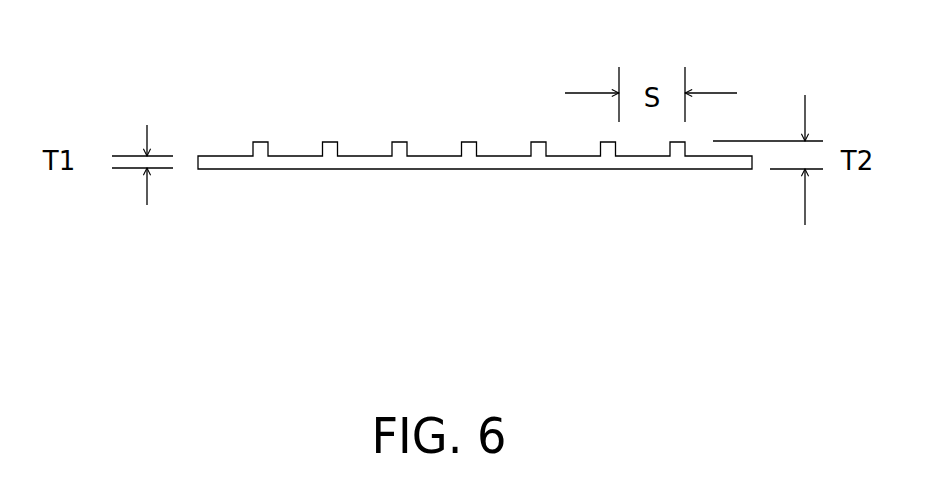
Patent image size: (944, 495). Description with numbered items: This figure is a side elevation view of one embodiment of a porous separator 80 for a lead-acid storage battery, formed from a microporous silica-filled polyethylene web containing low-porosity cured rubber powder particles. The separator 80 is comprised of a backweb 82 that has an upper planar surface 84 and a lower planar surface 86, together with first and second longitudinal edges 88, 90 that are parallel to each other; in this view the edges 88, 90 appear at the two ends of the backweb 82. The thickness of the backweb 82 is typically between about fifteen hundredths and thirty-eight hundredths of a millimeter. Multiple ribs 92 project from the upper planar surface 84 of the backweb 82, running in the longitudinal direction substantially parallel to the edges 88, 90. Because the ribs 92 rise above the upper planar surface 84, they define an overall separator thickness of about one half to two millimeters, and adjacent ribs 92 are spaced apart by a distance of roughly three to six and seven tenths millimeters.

The porous separator 80 is at (576, 208).
The backweb 82 is at (372, 166).
The upper planar surface 84 is at (237, 156).
The lower planar surface 86 is at (227, 168).
The first longitudinal edge 88 is at (197, 158).
The second longitudinal edge 90 is at (754, 162).
The ribs 92 is at (537, 137).